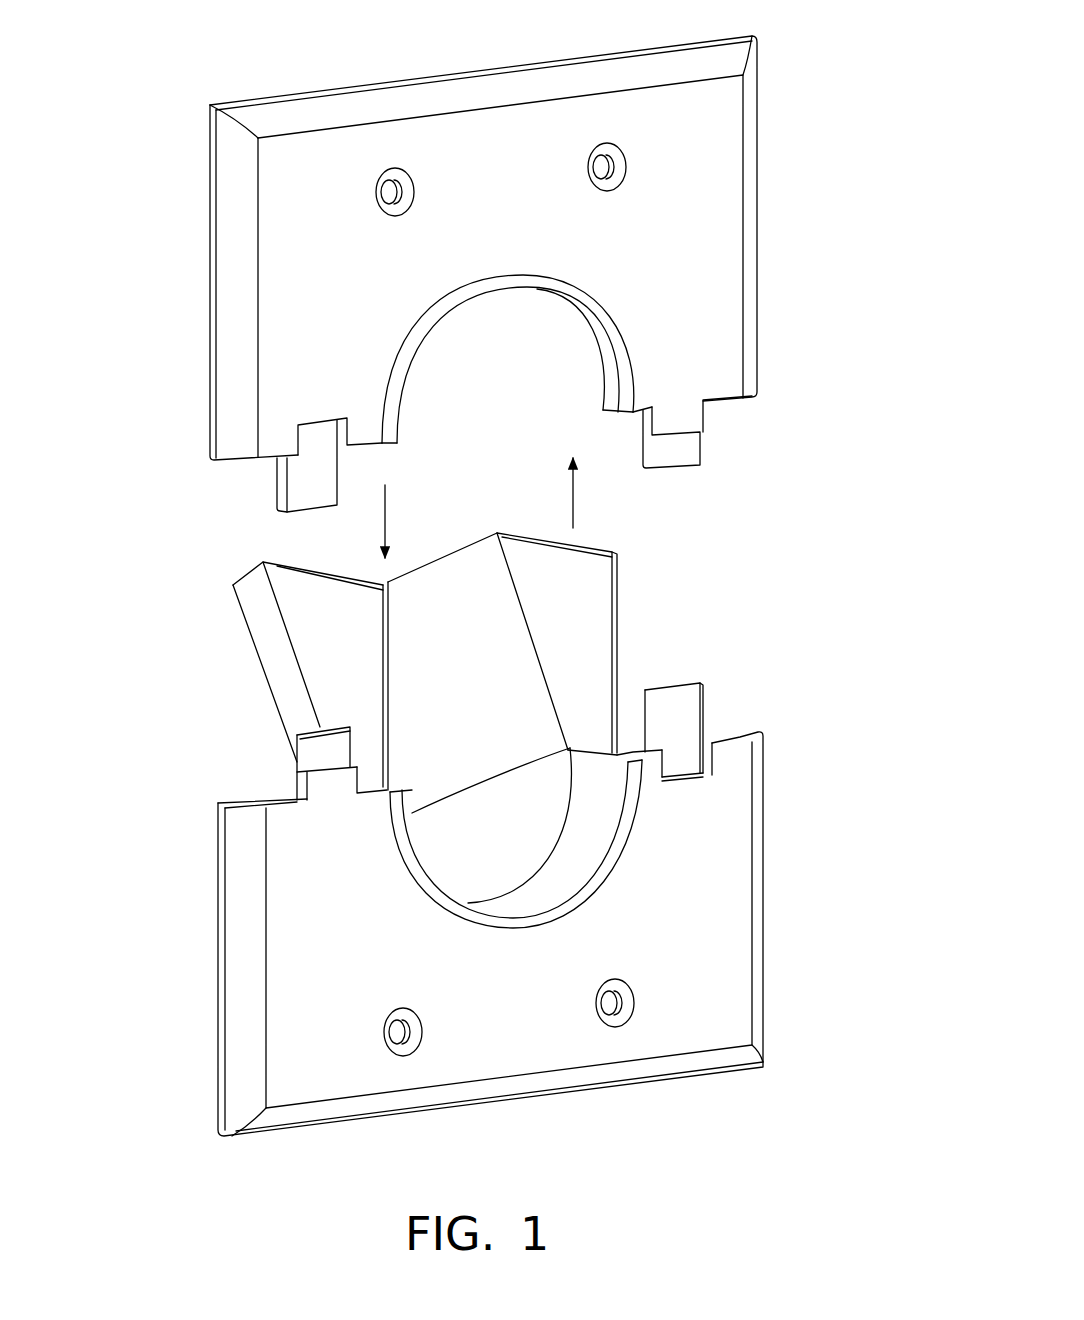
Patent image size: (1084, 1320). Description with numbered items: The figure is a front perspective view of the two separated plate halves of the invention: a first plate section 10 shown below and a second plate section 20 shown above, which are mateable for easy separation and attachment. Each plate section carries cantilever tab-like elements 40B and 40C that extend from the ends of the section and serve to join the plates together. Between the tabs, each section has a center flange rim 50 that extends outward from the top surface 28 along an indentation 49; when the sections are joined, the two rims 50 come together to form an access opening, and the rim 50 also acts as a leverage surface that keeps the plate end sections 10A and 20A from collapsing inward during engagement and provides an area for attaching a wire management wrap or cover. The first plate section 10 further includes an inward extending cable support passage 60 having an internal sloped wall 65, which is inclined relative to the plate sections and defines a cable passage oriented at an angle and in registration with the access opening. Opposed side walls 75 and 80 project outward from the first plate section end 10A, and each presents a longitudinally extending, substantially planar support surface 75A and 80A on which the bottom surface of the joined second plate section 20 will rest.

The first plate section 10 is at (789, 935).
The first plate section end 10A is at (415, 518).
The second plate section 20 is at (554, 610).
The second plate section end 20A is at (603, 496).
The top surface 28 is at (697, 130).
The cantilever tab-like element 40B is at (240, 479).
The cantilever tab-like element 40C is at (735, 421).
The indentation 49 is at (478, 273).
The center flange rim 50 is at (606, 306).
The cable support passage 60 is at (447, 673).
The internal sloped wall 65 is at (483, 603).
The side wall 75 is at (272, 662).
The support surface 75A is at (385, 687).
The side wall 80 is at (616, 644).
The support surface 80A is at (615, 663).